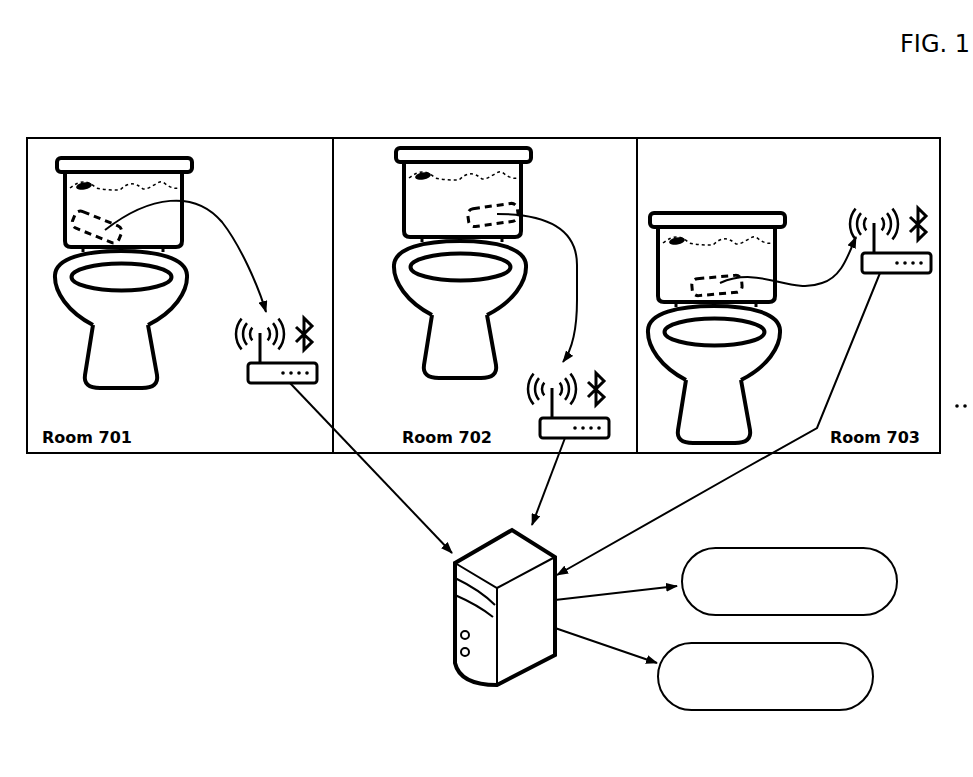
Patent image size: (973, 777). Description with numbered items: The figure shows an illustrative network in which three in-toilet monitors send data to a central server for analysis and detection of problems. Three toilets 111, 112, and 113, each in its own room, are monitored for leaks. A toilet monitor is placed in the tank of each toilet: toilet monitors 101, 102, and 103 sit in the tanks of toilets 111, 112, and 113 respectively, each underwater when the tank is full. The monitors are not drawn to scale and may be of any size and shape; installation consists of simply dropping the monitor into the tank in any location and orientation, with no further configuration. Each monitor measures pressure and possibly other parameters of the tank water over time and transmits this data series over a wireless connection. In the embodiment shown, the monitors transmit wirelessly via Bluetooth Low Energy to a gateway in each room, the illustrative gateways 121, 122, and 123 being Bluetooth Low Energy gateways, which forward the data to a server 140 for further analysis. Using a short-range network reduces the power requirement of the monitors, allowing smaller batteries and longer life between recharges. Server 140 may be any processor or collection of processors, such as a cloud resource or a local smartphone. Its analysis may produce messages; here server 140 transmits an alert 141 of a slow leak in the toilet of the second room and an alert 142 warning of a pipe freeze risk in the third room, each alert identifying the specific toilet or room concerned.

The toilet monitor 101 is at (96, 217).
The toilet monitor 102 is at (486, 208).
The toilet monitor 103 is at (718, 283).
The toilet 111 is at (80, 170).
The toilet 112 is at (422, 157).
The toilet 113 is at (695, 221).
The gateway 121 is at (268, 383).
The gateway 122 is at (595, 438).
The gateway 123 is at (903, 252).
The server 140 is at (452, 618).
The alert 141 is at (818, 548).
The alert 142 is at (690, 643).